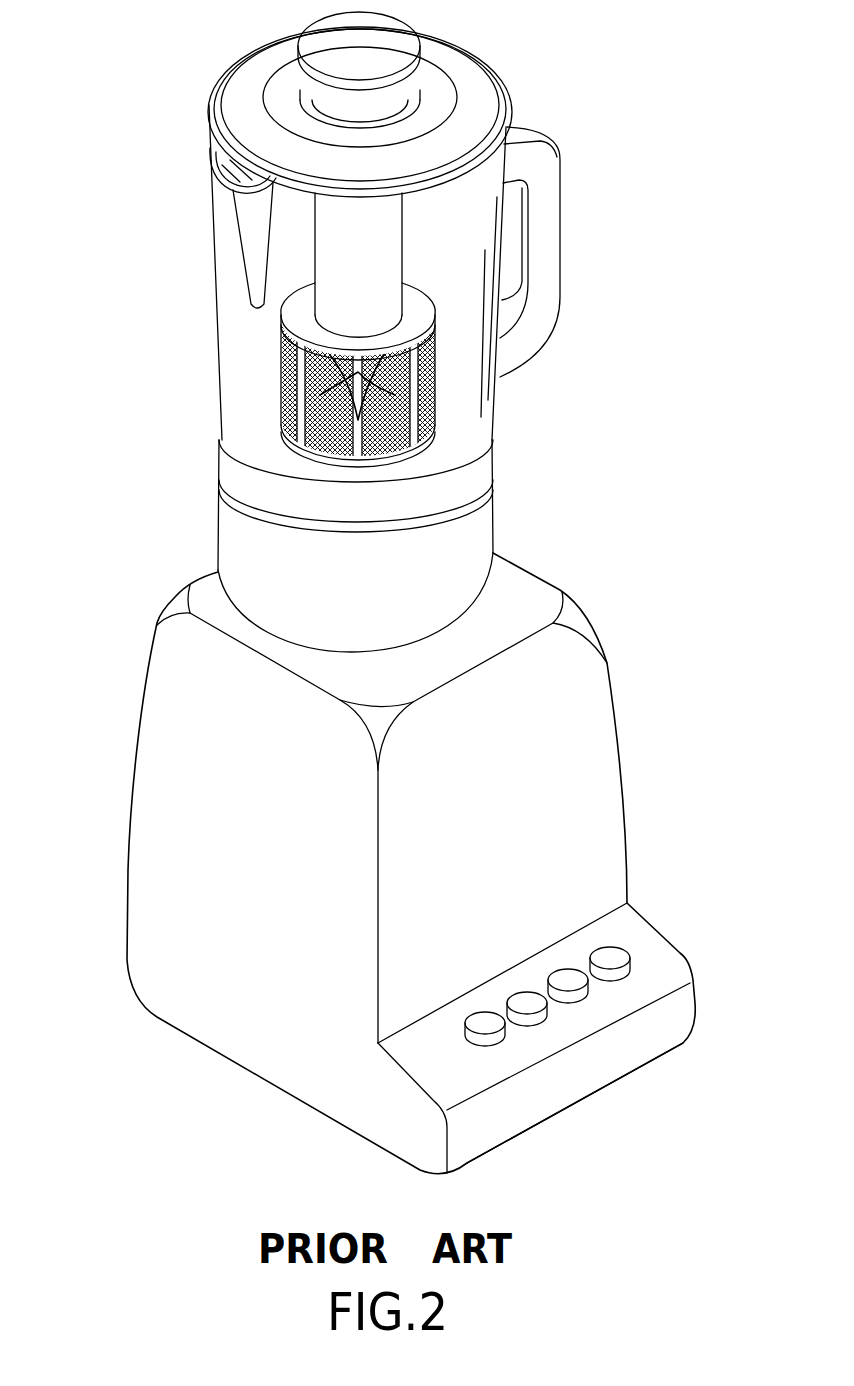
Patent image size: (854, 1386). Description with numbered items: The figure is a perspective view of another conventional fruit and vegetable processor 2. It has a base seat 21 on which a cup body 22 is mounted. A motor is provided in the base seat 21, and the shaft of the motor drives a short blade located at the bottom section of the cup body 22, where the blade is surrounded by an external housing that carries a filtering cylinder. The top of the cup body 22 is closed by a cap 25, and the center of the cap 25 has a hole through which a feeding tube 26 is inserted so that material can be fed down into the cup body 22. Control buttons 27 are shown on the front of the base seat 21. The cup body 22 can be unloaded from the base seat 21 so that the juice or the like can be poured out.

The blender (prior art) 2 is at (596, 49).
The base seat 21 is at (136, 791).
The cup body 22 is at (218, 290).
The cap 25 is at (452, 62).
The feeding tube 26 is at (322, 303).
The control buttons 27 is at (617, 950).